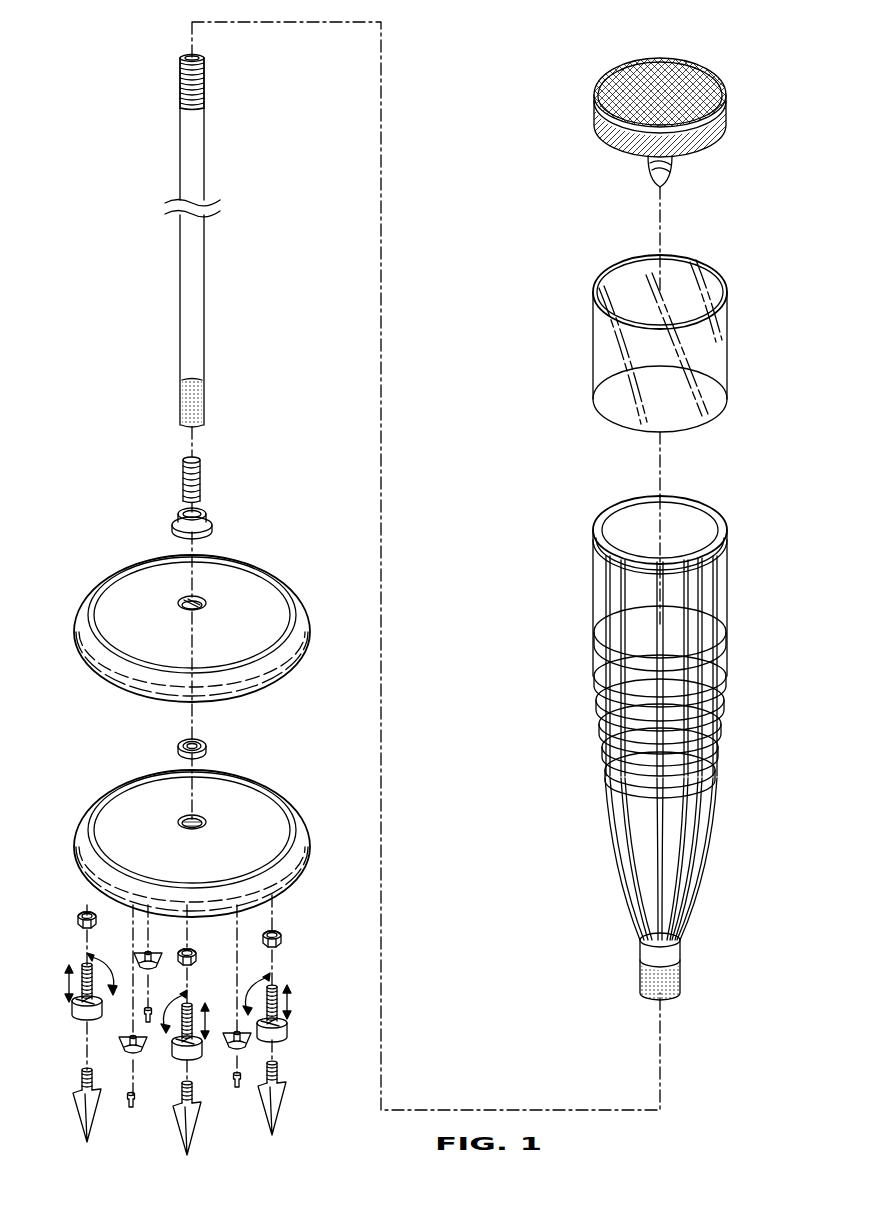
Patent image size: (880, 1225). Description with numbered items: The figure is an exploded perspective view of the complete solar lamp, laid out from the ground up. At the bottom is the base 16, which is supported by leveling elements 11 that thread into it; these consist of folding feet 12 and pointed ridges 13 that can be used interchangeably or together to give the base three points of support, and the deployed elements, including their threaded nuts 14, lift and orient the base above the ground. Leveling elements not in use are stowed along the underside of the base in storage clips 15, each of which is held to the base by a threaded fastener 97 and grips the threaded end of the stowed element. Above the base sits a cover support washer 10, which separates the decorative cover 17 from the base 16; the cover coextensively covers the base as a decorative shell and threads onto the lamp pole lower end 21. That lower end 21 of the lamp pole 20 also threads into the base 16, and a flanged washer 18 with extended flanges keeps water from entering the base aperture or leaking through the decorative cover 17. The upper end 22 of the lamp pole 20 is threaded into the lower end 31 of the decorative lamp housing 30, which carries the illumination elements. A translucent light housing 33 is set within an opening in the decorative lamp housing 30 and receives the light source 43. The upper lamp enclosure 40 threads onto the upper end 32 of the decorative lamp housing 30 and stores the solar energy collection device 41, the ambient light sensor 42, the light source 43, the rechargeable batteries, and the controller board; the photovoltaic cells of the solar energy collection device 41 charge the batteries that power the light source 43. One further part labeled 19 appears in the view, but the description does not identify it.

The cover support washer 10 is at (207, 748).
The leveling elements 11 is at (67, 1001).
The folding feet 12 is at (73, 1010).
The pointed ridges 13 is at (75, 1105).
The threaded nuts 14 is at (82, 920).
The storage clips 15 is at (120, 1052).
The base 16 is at (92, 828).
The decorative cover 17 is at (90, 618).
The flanged washer 18 is at (209, 520).
The spring 19 is at (201, 470).
The lamp pole 20 is at (200, 57).
The lamp pole lower end 21 is at (181, 427).
The upper end of the lamp pole 22 is at (192, 83).
The decorative lamp housing 30 is at (707, 746).
The lower end of the decorative lamp housing 31 is at (681, 968).
The upper end of the decorative lamp housing 32 is at (722, 515).
The translucent light housing 33 is at (728, 348).
The upper lamp enclosure 40 is at (704, 109).
The solar energy collection device 41 is at (705, 73).
The ambient light sensor 42 is at (632, 78).
The light source 43 is at (674, 170).
The threaded fastener 97 is at (135, 1100).